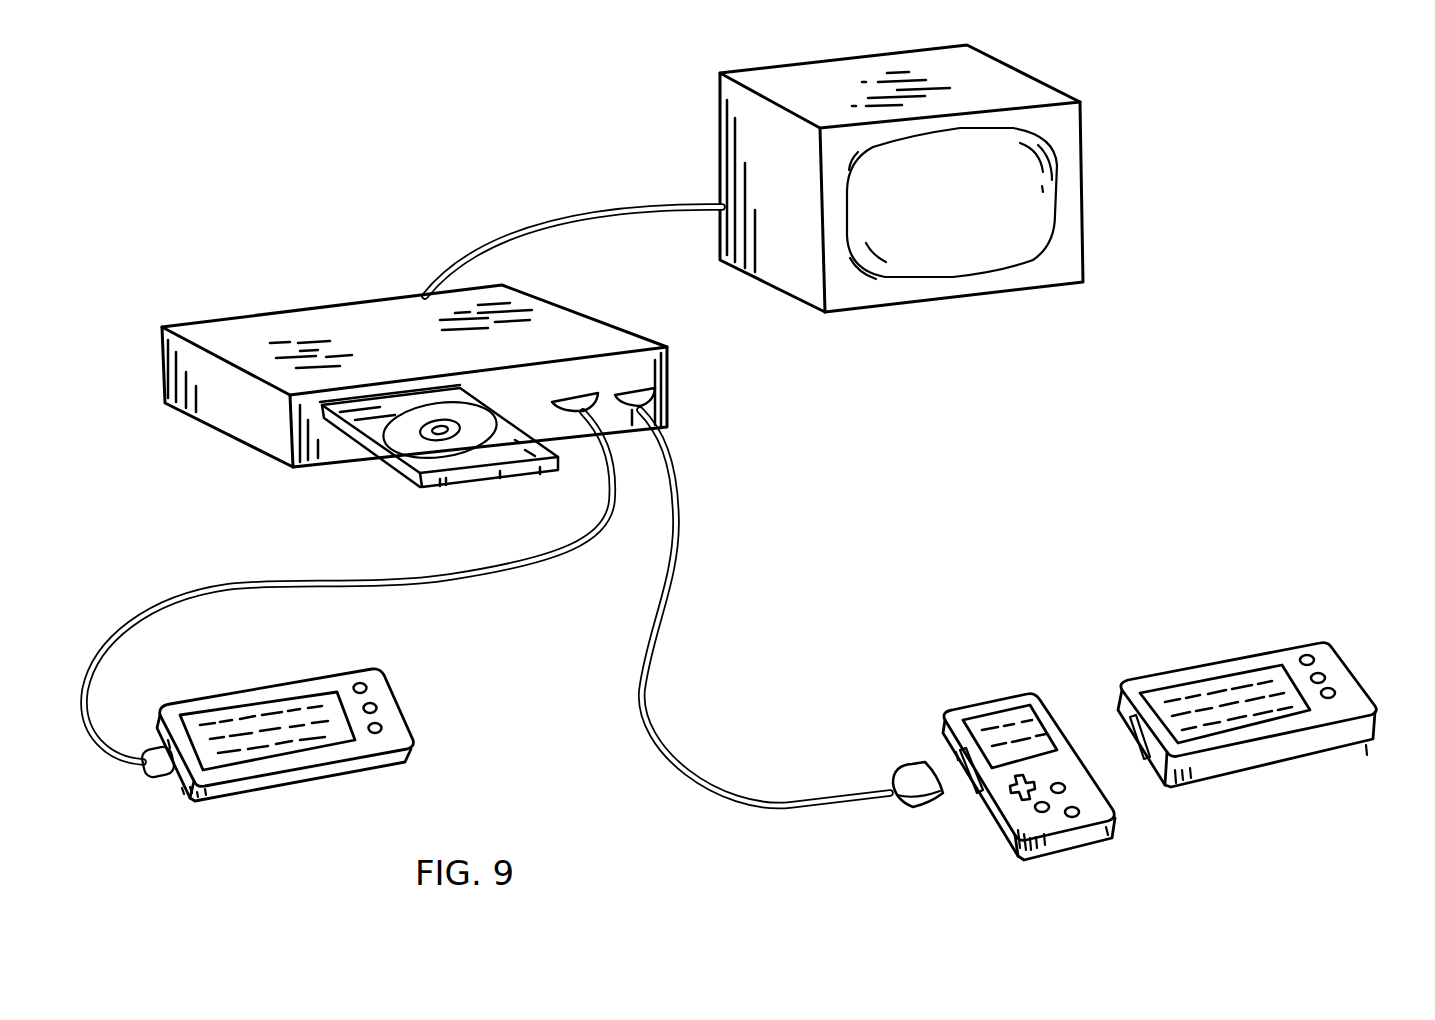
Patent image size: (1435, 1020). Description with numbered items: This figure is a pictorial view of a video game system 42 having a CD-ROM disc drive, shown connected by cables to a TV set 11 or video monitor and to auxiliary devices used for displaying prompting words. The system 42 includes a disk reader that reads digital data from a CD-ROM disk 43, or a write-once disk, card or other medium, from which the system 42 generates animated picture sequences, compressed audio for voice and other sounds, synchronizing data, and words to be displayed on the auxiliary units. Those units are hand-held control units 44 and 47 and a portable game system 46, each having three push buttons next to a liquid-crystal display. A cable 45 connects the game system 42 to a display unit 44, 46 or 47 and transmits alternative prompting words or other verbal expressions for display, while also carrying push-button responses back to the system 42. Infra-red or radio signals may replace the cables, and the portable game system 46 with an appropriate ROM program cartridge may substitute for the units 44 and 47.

The TV set 11 is at (1072, 132).
The video game system 42 is at (414, 386).
The CD-ROM disk 43 is at (410, 441).
The hand-held control unit 44 is at (291, 728).
The cable 45 is at (658, 738).
The portable game system 46 is at (1059, 785).
The hand-held control unit 47 is at (1266, 707).